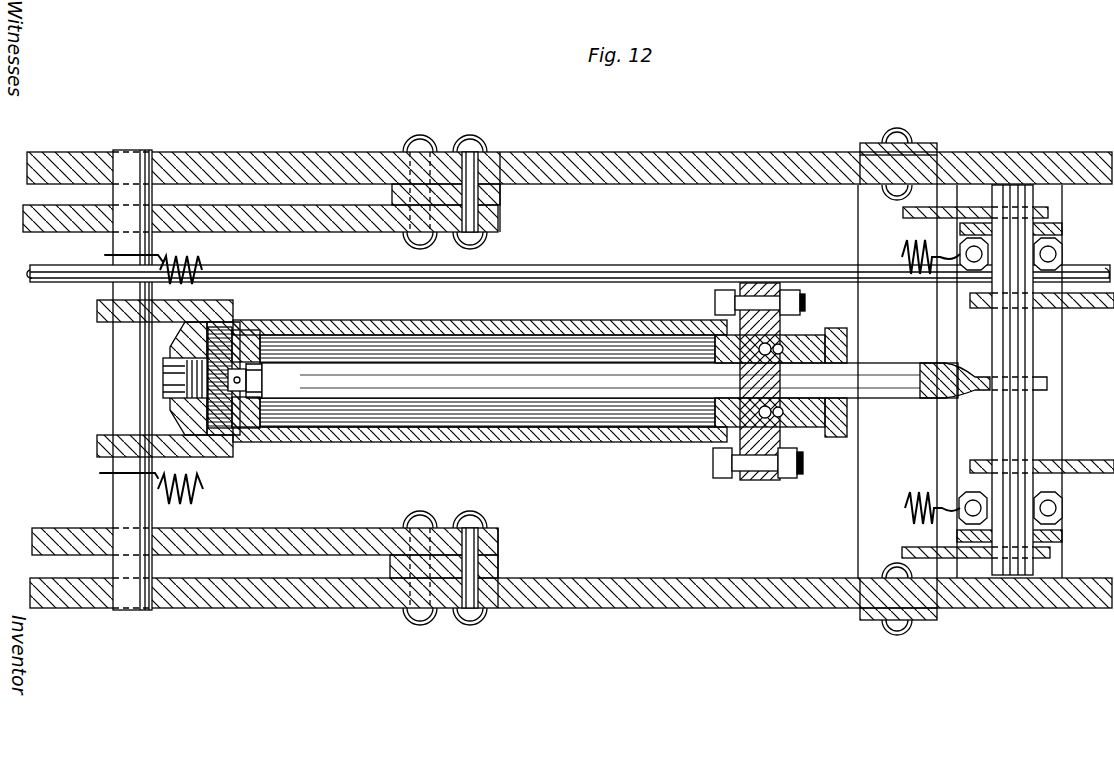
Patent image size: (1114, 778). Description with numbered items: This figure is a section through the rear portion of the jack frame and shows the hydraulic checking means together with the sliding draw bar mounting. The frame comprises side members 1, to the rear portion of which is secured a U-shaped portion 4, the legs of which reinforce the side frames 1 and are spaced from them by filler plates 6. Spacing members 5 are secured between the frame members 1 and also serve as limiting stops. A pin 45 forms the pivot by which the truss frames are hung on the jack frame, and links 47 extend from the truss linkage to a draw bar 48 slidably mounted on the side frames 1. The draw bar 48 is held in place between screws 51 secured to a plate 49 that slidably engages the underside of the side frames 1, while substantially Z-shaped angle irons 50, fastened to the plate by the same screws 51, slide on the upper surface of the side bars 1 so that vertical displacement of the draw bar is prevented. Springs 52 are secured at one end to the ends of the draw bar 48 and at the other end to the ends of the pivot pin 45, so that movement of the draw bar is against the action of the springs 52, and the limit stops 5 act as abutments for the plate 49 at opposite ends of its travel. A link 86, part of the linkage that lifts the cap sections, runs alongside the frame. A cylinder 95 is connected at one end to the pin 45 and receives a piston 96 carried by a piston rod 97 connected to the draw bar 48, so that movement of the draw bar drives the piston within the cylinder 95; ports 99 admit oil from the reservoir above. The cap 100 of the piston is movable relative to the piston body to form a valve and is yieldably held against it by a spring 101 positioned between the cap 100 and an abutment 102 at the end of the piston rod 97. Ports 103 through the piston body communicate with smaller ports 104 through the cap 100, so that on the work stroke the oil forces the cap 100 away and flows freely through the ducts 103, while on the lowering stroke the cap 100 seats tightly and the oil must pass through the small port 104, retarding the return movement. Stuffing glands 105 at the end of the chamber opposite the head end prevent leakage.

The side members 1 is at (652, 162).
The U-shaped portion 4 is at (226, 530).
The spacing members 5 is at (935, 143).
The filler plates 6 is at (498, 566).
The pin 45 is at (128, 348).
The links 47 is at (940, 205).
The draw bar 48 is at (1030, 435).
The plate 49 is at (1062, 353).
The Z-shaped angle irons 50 is at (1050, 590).
The screws 51 is at (1062, 510).
The springs 52 is at (196, 262).
The link 86 is at (611, 268).
The cylinder 95 is at (468, 320).
The piston 96 is at (335, 324).
The piston rod 97 is at (621, 372).
The ports 99 is at (222, 340).
The piston cap 100 is at (170, 364).
The spring 101 is at (262, 428).
The abutment 102 is at (228, 440).
The ports 103 is at (330, 378).
The smaller ports 104 is at (258, 352).
The stuffing glands 105 is at (800, 448).